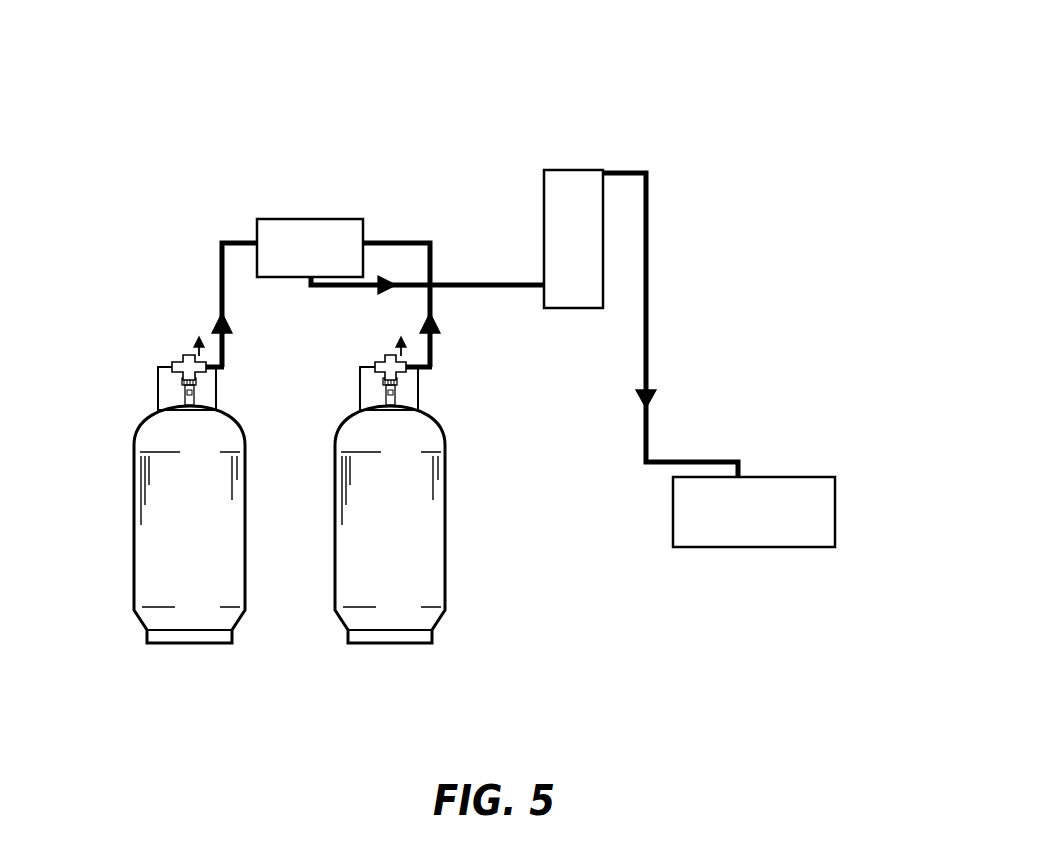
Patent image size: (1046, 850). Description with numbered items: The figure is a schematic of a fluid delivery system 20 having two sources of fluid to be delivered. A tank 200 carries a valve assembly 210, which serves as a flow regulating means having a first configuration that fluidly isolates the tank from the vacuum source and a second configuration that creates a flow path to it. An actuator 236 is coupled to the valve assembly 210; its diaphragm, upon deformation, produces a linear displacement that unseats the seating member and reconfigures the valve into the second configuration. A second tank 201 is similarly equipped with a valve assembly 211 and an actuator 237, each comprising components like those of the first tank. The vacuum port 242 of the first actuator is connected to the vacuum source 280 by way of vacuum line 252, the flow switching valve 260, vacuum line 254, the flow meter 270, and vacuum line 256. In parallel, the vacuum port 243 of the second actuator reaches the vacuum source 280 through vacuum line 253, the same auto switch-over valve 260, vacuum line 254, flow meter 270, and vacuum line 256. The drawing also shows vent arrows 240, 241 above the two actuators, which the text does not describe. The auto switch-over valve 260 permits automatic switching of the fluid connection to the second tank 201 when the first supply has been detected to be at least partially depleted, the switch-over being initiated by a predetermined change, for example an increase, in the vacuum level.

The fluid delivery system 20 is at (736, 115).
The tank 200 is at (134, 492).
The second tank 201 is at (445, 543).
The valve assembly 210 is at (163, 382).
The valve assembly 211 is at (365, 382).
The actuator 236 is at (184, 361).
The actuator 237 is at (382, 361).
The first vent 240 is at (190, 334).
The second vent 241 is at (397, 334).
The vacuum port 242 is at (220, 372).
The vacuum port 243 is at (425, 372).
The vacuum line 252 is at (215, 305).
The vacuum line 253 is at (425, 305).
The vacuum line 254 is at (427, 277).
The vacuum line 256 is at (670, 325).
The flow switching valve 260 is at (310, 248).
The flow meter 270 is at (573, 239).
The vacuum source 280 is at (754, 512).